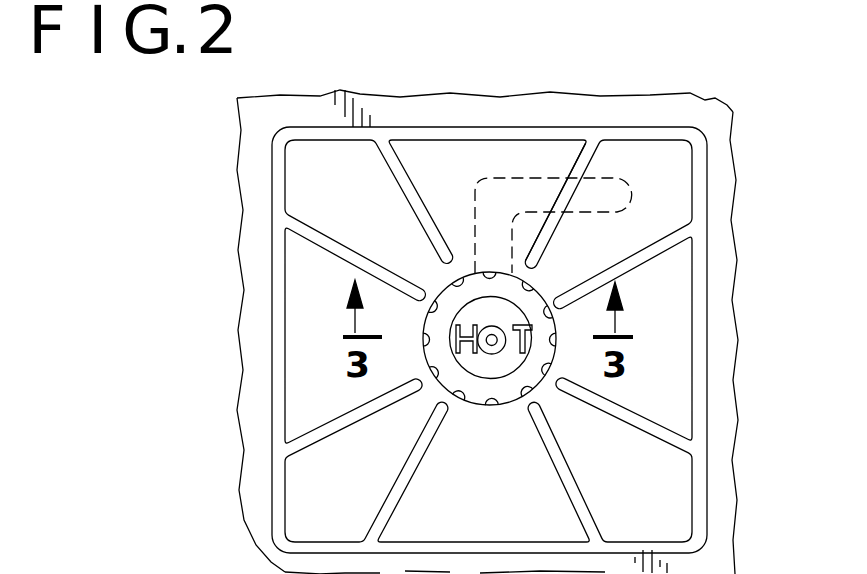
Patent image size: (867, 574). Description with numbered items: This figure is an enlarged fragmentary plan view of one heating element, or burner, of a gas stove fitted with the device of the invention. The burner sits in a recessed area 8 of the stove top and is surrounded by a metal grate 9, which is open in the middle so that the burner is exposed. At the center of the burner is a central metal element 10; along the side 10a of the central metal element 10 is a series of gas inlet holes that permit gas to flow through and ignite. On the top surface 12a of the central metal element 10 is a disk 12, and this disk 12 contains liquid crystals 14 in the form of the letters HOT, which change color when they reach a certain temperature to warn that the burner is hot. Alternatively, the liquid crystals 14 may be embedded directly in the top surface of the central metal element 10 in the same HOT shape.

The recessed area 8 is at (668, 180).
The metal grate 9 is at (530, 262).
The central metal element 10 is at (490, 466).
The side of the central metal element 10a is at (538, 386).
The disk 12 is at (443, 388).
The top surface 12a is at (414, 271).
The liquid crystals 14 is at (491, 396).